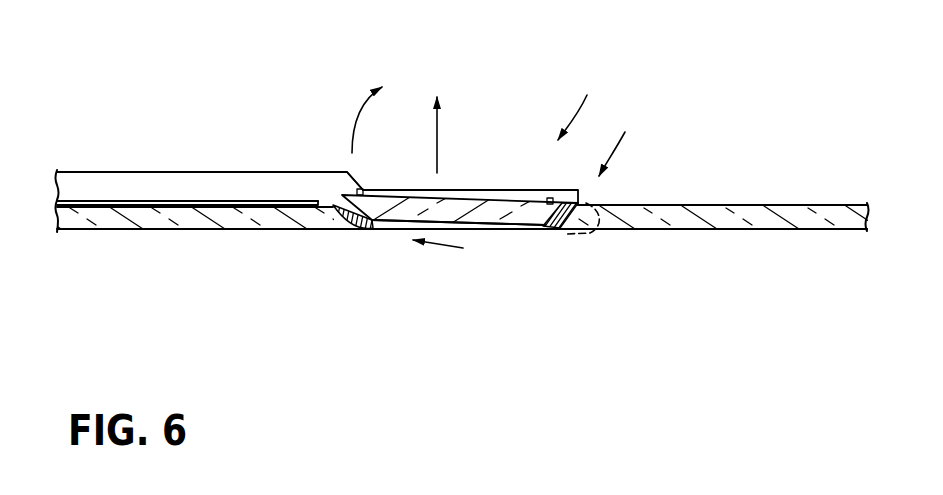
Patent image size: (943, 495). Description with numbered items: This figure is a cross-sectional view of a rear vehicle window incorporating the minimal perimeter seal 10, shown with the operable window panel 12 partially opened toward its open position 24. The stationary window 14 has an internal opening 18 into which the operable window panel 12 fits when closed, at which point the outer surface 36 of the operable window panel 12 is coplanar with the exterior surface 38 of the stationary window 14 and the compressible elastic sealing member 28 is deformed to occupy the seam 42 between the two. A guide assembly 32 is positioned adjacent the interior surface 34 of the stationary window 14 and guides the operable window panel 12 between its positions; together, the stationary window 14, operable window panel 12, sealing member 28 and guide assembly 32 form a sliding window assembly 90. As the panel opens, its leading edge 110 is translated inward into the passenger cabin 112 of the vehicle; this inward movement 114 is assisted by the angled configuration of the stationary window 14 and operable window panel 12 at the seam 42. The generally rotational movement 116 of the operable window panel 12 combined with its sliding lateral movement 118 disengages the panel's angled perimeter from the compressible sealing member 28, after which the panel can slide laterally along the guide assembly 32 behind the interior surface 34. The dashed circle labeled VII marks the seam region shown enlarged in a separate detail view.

The minimal perimeter seal 10 is at (330, 248).
The operable window panel 12 is at (495, 207).
The stationary window 14 is at (110, 215).
The internal opening 18 is at (407, 176).
The open position 24 is at (608, 153).
The compressible elastic sealing member 28 is at (353, 230).
The guide assembly 32 is at (158, 172).
The interior surface 34 is at (217, 203).
The outer surface 36 is at (478, 227).
The exterior surface 38 is at (770, 230).
The seam 42 is at (549, 242).
The sliding window assembly 90 is at (245, 245).
The leading edge 110 is at (345, 178).
The passenger cabin 112 is at (586, 103).
The inward movement 114 is at (437, 125).
The rotational movement 116 is at (360, 107).
The lateral movement 118 is at (440, 245).
The detail view VII is at (567, 236).